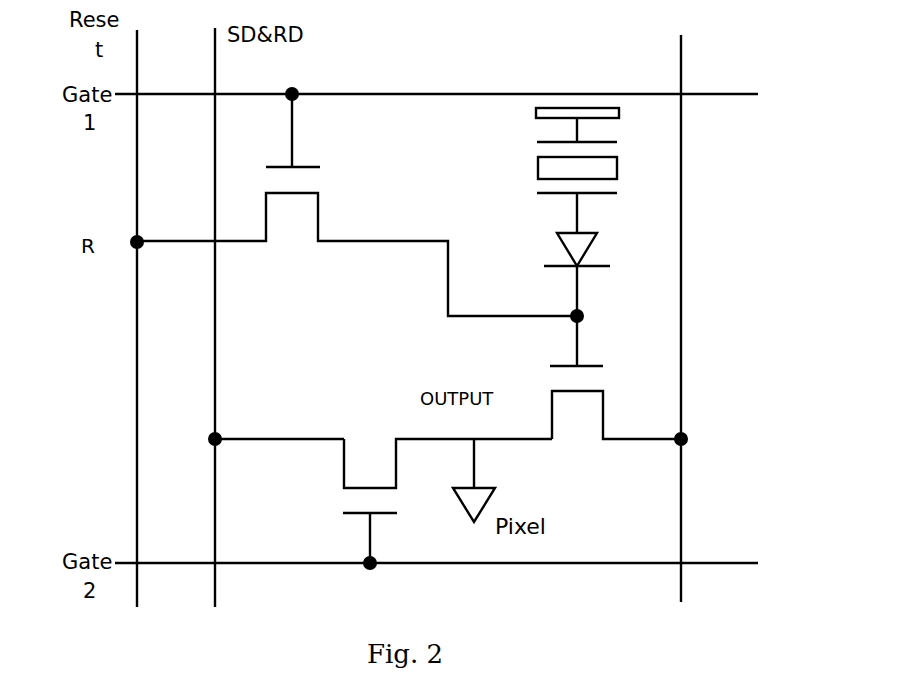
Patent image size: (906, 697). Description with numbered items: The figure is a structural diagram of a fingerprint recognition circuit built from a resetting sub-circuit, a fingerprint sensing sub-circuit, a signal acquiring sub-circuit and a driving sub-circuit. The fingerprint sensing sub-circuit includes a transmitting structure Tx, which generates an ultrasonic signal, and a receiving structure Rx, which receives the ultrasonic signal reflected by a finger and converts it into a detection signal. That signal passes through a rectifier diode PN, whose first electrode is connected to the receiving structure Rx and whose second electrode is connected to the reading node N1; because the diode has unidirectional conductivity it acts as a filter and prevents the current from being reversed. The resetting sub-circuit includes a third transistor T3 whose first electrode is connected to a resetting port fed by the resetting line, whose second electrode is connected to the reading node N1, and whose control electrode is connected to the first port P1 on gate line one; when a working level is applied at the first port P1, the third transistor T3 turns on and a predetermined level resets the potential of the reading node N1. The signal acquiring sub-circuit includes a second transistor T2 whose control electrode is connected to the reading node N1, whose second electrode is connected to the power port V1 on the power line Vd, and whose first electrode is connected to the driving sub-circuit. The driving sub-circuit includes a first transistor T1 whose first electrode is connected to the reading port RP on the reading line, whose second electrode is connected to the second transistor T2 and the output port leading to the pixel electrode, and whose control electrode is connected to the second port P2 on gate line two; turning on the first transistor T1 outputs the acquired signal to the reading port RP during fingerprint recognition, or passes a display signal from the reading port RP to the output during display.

The power line Vd is at (660, 318).
The first port P1 is at (294, 114).
The third transistor T3 is at (357, 241).
The transmitting structure Tx is at (594, 124).
The receiving structure Rx is at (596, 195).
The rectifier diode PN is at (592, 274).
The reading node N1 is at (604, 332).
The second transistor T2 is at (615, 416).
The power port V1 is at (707, 440).
The reading port RP is at (253, 433).
The first transistor T1 is at (447, 460).
The second port P2 is at (366, 557).